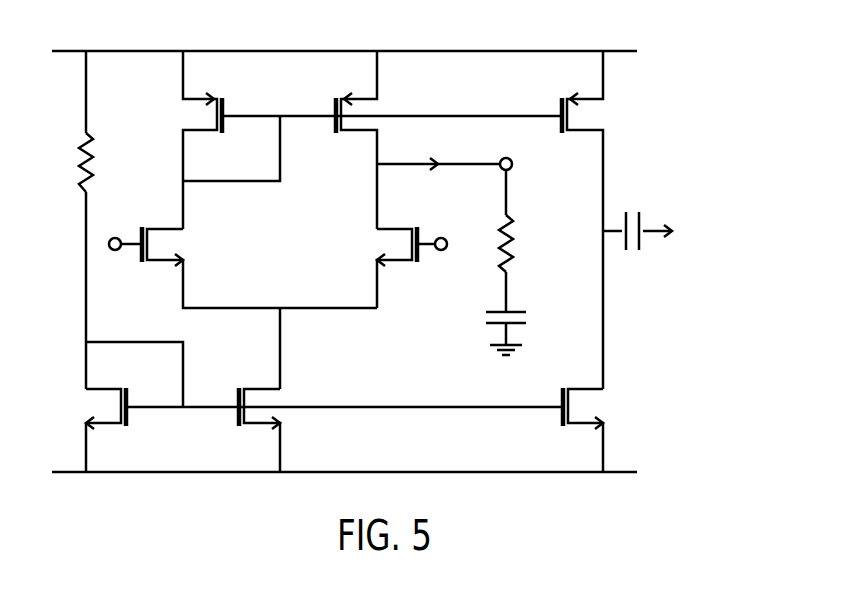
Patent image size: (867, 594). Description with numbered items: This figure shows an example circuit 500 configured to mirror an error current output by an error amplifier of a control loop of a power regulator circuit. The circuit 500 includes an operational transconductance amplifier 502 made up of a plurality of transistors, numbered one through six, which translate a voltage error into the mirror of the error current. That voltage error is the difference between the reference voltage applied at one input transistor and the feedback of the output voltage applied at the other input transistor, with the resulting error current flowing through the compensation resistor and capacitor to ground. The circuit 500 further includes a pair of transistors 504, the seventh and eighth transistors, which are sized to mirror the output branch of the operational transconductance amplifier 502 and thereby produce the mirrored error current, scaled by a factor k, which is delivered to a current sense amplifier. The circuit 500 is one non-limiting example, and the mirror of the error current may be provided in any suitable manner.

The circuit 500 is at (703, 61).
The operational transconductance amplifier 502 is at (198, 36).
The pair of transistors 504 is at (578, 45).